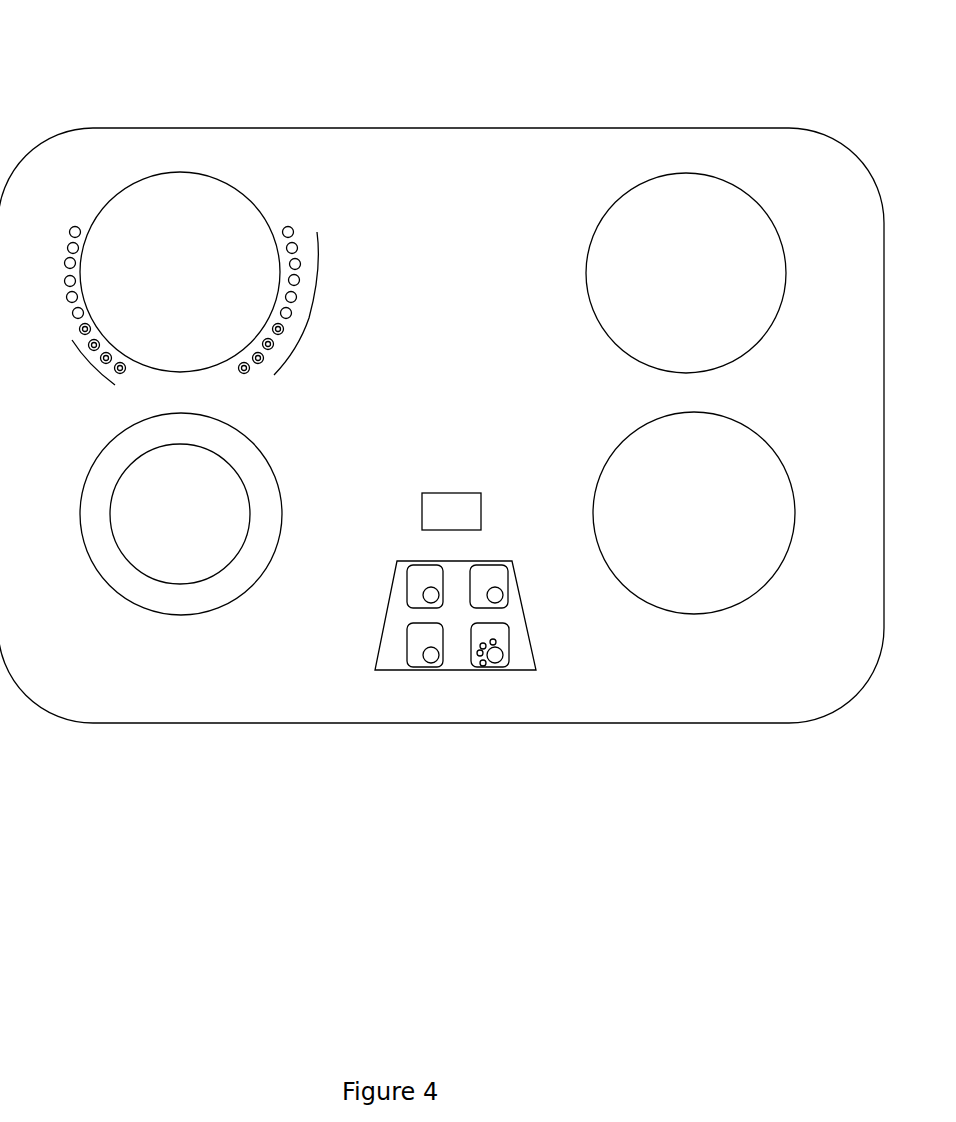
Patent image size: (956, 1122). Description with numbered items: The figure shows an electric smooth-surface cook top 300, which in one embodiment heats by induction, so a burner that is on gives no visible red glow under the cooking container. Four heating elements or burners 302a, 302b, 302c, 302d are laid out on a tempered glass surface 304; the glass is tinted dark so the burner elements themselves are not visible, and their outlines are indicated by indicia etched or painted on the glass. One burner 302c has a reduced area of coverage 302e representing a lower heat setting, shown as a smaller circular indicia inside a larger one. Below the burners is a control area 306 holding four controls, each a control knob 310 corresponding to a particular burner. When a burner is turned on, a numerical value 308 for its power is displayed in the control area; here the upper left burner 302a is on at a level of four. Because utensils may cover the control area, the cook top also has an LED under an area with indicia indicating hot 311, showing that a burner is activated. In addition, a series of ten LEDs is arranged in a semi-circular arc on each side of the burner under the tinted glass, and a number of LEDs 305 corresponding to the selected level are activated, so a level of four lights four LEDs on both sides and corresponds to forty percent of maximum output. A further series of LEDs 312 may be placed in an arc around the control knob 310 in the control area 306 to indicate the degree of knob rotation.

The electric smooth-surface cook top 300 is at (155, 57).
The upper left burner 302a is at (248, 192).
The burner 302b is at (586, 258).
The burner 302c is at (260, 448).
The burner 302d is at (602, 468).
The reduced area of coverage 302e is at (137, 572).
The tempered glass surface 304 is at (480, 128).
The activated LEDs 305 is at (93, 368).
The control area 306 is at (393, 675).
The numerical value 308 is at (407, 575).
The control knob 310 is at (425, 597).
The hot indicator 311 is at (467, 493).
The series of LEDs 312 is at (487, 637).